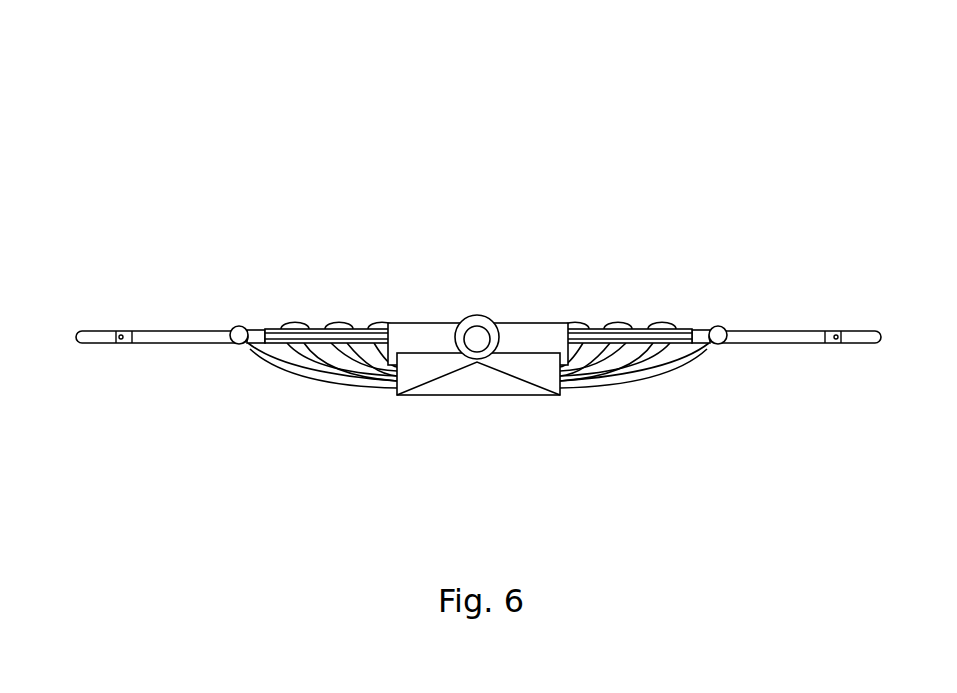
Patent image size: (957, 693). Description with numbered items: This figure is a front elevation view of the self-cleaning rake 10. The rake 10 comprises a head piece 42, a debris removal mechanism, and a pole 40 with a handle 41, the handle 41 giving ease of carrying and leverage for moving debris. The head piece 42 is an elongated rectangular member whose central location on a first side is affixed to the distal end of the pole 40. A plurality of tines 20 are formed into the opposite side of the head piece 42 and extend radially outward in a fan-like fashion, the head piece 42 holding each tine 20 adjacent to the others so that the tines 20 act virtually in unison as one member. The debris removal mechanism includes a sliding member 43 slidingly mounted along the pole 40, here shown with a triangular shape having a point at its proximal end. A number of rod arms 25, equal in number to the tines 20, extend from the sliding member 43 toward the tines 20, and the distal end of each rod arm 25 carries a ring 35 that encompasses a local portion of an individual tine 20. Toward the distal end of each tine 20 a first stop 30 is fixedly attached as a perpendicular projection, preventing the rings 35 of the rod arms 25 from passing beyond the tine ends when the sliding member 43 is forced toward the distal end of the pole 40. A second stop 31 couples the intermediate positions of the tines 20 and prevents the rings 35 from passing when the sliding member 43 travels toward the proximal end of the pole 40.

The self-cleaning rake 10 is at (110, 173).
The tine 20 is at (93, 331).
The rod arm 25 is at (333, 382).
The first stop 30 is at (123, 343).
The second stop 31 is at (258, 329).
The ring 35 is at (235, 327).
The pole 40 is at (471, 334).
The handle 41 is at (488, 318).
The head piece 42 is at (403, 336).
The sliding member 43 is at (488, 383).